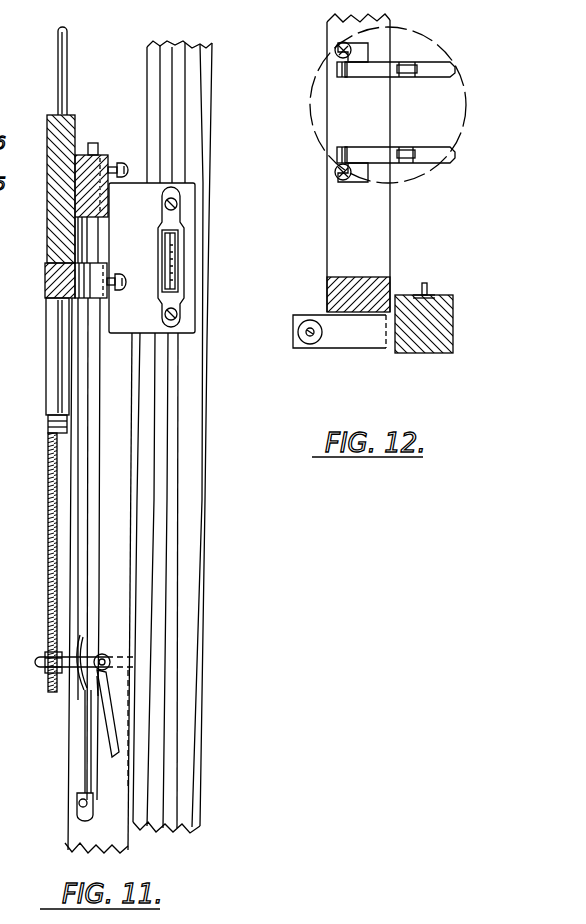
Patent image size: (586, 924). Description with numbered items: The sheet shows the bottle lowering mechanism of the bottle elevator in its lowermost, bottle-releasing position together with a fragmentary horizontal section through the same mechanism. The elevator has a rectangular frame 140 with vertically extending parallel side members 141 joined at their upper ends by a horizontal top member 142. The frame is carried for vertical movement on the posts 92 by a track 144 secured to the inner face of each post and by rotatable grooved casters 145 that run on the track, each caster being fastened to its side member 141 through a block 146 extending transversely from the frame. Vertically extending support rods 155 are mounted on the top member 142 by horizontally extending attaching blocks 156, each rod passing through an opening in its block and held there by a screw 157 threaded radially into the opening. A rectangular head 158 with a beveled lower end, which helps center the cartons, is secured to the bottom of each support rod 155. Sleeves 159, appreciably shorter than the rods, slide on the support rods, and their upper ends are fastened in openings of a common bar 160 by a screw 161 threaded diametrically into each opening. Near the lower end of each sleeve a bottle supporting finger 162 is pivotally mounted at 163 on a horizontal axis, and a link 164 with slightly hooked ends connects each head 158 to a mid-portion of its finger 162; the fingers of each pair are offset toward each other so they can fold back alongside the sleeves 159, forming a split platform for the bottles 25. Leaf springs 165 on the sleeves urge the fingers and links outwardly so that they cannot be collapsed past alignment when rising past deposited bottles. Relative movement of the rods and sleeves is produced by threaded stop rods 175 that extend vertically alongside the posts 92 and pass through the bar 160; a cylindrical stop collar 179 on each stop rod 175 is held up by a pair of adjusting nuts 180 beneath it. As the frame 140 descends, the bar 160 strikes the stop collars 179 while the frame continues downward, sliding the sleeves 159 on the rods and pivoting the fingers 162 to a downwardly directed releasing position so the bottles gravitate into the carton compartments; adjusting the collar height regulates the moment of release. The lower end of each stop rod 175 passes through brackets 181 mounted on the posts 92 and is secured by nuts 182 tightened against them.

In FIG. 12, the bottles 25 is at (424, 182).
In FIG. 11, the posts 92 is at (197, 518).
In FIG. 12, the posts 92 is at (437, 347).
In FIG. 12, the rectangular frame 140 is at (322, 280).
In FIG. 12, the side members 141 is at (373, 282).
In FIG. 11, the horizontal top member 142 is at (60, 226).
In FIG. 11, the track 144 is at (170, 463).
In FIG. 12, the track 144 is at (427, 290).
In FIG. 11, the grooved casters 145 is at (168, 250).
In FIG. 11, the block 146 is at (190, 230).
In FIG. 11, the support rods 155 is at (85, 758).
In FIG. 12, the support rods 155 is at (338, 56).
In FIG. 11, the attaching blocks 156 is at (82, 155).
In FIG. 11, the screw 157 is at (118, 163).
In FIG. 11, the rectangular head 158 is at (81, 810).
In FIG. 11, the sleeves 159 is at (88, 470).
In FIG. 12, the sleeves 159 is at (336, 49).
In FIG. 11, the bar 160 is at (55, 281).
In FIG. 11, the screw 161 is at (113, 290).
In FIG. 11, the bottle supporting finger 162 is at (90, 700).
In FIG. 12, the bottle supporting finger 162 is at (447, 62).
In FIG. 11, the pivot 163 is at (105, 645).
In FIG. 12, the pivot 163 is at (363, 44).
In FIG. 11, the link 164 is at (80, 767).
In FIG. 12, the link 164 is at (402, 150).
In FIG. 11, the leaf springs 165 is at (80, 650).
In FIG. 12, the leaf springs 165 is at (341, 78).
In FIG. 11, the stop rods 175 is at (52, 556).
In FIG. 12, the stop rods 175 is at (311, 334).
In FIG. 11, the stop collar 179 is at (58, 345).
In FIG. 12, the stop collar 179 is at (308, 341).
In FIG. 11, the adjusting nuts 180 is at (48, 431).
In FIG. 11, the brackets 181 is at (133, 710).
In FIG. 12, the brackets 181 is at (373, 340).
In FIG. 11, the nuts 182 is at (45, 670).